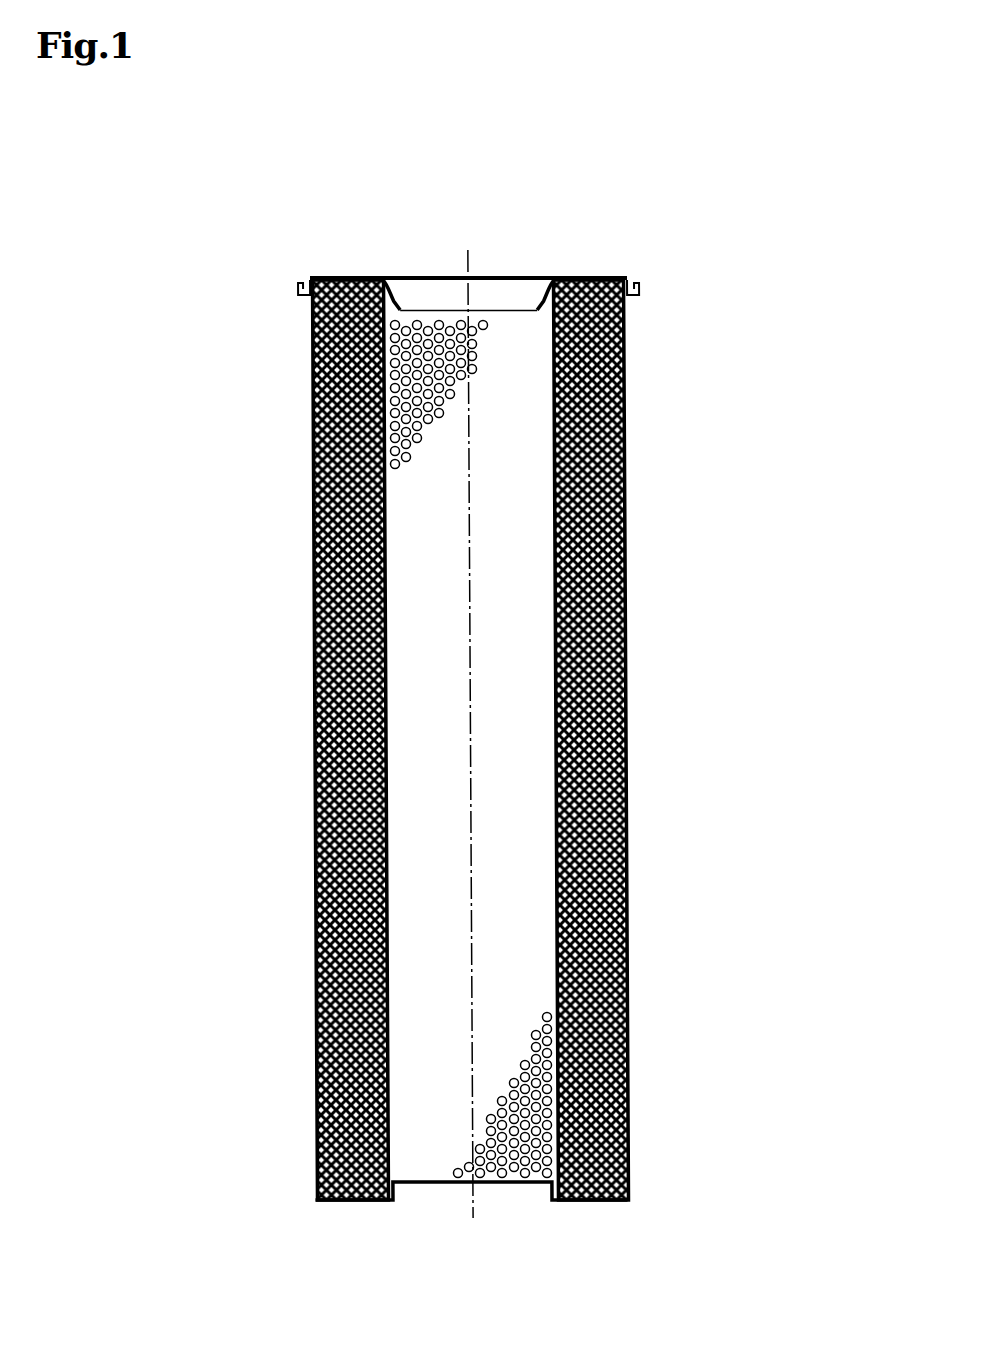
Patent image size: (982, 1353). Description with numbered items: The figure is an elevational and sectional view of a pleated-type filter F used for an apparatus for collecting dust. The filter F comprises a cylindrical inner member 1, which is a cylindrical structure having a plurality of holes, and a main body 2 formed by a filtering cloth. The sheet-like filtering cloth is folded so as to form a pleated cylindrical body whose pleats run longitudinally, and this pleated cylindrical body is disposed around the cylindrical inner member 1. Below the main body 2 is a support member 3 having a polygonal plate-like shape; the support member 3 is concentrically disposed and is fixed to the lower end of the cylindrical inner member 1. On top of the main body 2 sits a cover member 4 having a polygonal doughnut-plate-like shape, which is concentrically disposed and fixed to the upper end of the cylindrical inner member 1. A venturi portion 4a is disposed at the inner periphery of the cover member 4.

The pleated-type filter F is at (267, 453).
The cylindrical inner member 1 is at (552, 495).
The main body 2 is at (605, 645).
The support member 3 is at (430, 1183).
The cover member 4 is at (583, 280).
The venturi portion 4a is at (393, 298).